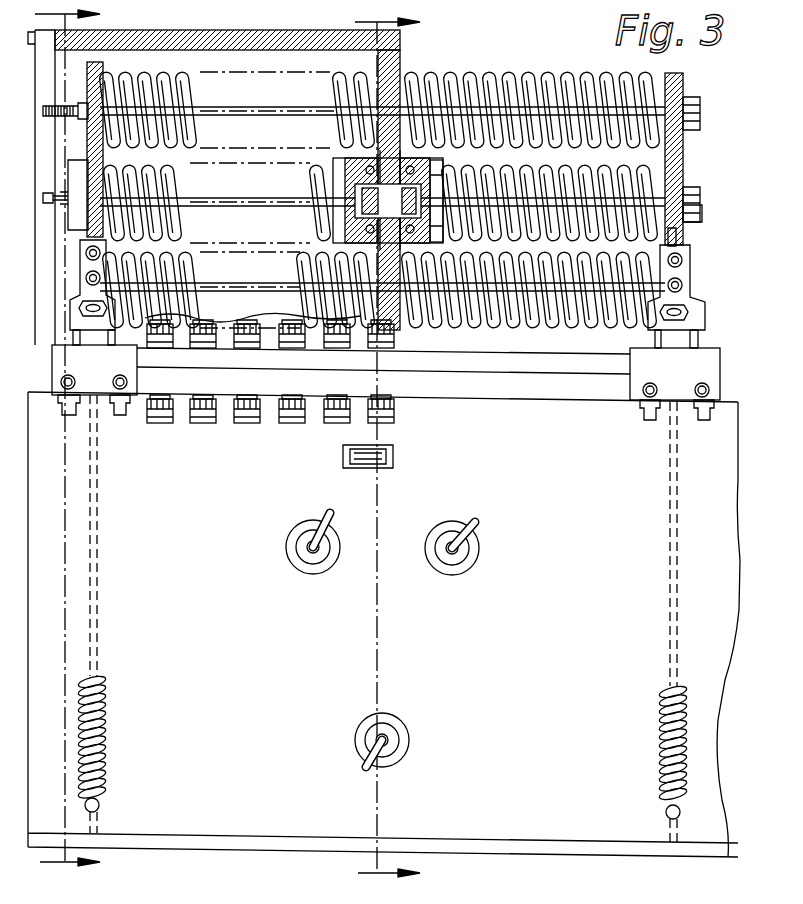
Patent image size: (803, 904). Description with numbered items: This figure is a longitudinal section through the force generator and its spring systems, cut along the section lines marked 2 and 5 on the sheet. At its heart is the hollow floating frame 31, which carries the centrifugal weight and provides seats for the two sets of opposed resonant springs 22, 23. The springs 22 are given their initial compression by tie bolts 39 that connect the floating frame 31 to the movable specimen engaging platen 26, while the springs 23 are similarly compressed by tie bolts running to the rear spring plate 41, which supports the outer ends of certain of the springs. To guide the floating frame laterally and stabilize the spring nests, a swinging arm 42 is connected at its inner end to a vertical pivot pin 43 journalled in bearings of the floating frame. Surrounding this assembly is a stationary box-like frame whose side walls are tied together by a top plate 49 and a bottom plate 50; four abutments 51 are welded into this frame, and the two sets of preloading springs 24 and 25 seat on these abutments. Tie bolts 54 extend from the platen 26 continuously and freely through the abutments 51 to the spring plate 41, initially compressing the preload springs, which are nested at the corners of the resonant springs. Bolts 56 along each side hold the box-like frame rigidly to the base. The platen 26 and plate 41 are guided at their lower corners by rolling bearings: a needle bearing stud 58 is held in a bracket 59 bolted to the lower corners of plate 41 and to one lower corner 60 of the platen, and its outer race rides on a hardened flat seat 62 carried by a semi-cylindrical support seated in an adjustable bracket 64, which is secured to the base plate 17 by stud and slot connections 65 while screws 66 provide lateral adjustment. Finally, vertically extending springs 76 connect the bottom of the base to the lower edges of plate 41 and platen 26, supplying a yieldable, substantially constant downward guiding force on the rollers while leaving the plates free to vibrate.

The section line 2- 2 is at (387, 448).
The section line 5- 5 is at (67, 444).
The base plate 17 is at (567, 363).
The resonant springs 22 is at (640, 184).
The resonant springs 23 is at (178, 226).
The preloading springs 24 is at (535, 78).
The preloading springs 25 is at (205, 66).
The specimen engaging platen 26 is at (683, 158).
The floating frame 31 is at (432, 166).
The tie bolts 39 is at (702, 212).
The spring plate 41 is at (90, 66).
The swinging arm 42 is at (360, 200).
The vertical pivot pin 43 is at (348, 166).
The top plate 49 is at (303, 34).
The bottom plate 50 is at (400, 350).
The abutments 51 is at (400, 62).
The tie bolts 54 is at (700, 116).
The bolts 56 is at (240, 422).
The stud 58 is at (80, 308).
The bracket 59 is at (80, 258).
The lower corner 60 is at (678, 240).
The flat seat 62 is at (58, 345).
The adjustable bracket 64 is at (75, 360).
The stud and slot connections 65 is at (116, 410).
The screws 66 is at (114, 383).
The springs 76 is at (97, 566).